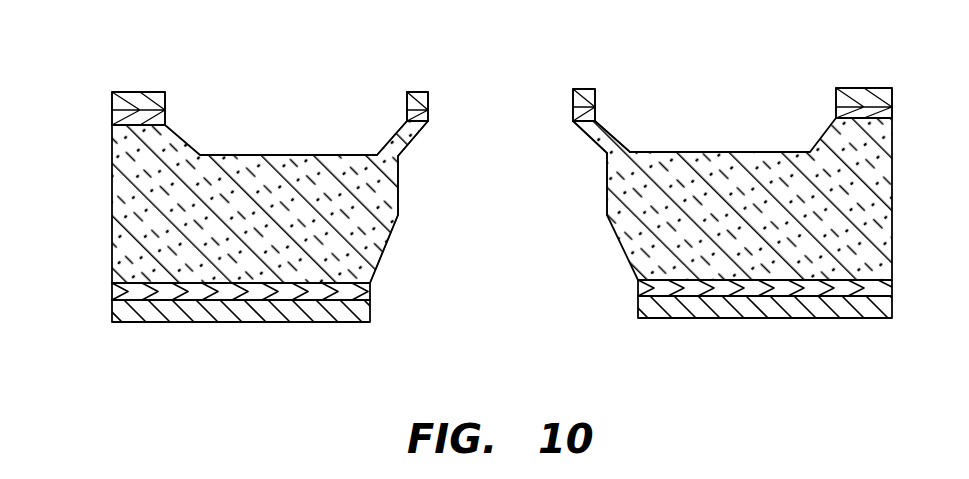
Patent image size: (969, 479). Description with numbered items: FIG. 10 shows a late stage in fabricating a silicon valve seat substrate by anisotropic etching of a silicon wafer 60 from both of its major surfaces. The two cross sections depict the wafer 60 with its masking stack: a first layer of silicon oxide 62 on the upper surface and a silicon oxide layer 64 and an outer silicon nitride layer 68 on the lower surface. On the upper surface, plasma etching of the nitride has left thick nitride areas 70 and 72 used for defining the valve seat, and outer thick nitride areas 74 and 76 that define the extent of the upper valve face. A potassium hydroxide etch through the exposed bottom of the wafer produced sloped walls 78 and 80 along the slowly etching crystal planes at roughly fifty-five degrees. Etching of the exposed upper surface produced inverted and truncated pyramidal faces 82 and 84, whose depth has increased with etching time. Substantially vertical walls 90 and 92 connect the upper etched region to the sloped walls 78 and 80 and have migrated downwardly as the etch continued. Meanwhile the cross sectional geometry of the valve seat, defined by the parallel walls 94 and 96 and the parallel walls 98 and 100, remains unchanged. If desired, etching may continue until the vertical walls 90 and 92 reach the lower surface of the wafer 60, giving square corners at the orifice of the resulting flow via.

The silicon wafer 60 is at (115, 200).
The silicon oxide layer 62 is at (112, 118).
The silicon oxide layer 64 is at (115, 295).
The silicon nitride layer 68 is at (133, 318).
The thick nitride area 70 is at (422, 90).
The thick nitride area 72 is at (585, 89).
The outer thick nitride area 74 is at (138, 92).
The outer thick nitride area 76 is at (866, 92).
The sloped wall 78 is at (385, 258).
The sloped wall 80 is at (607, 240).
The inverted truncated pyramidal face 82 is at (268, 155).
The inverted truncated pyramidal face 84 is at (700, 152).
The vertical wall 90 is at (398, 198).
The vertical wall 92 is at (607, 200).
The parallel opposed wall 94 is at (402, 132).
The parallel opposed wall 96 is at (417, 137).
The parallel opposed wall 98 is at (585, 128).
The parallel opposed wall 100 is at (600, 130).